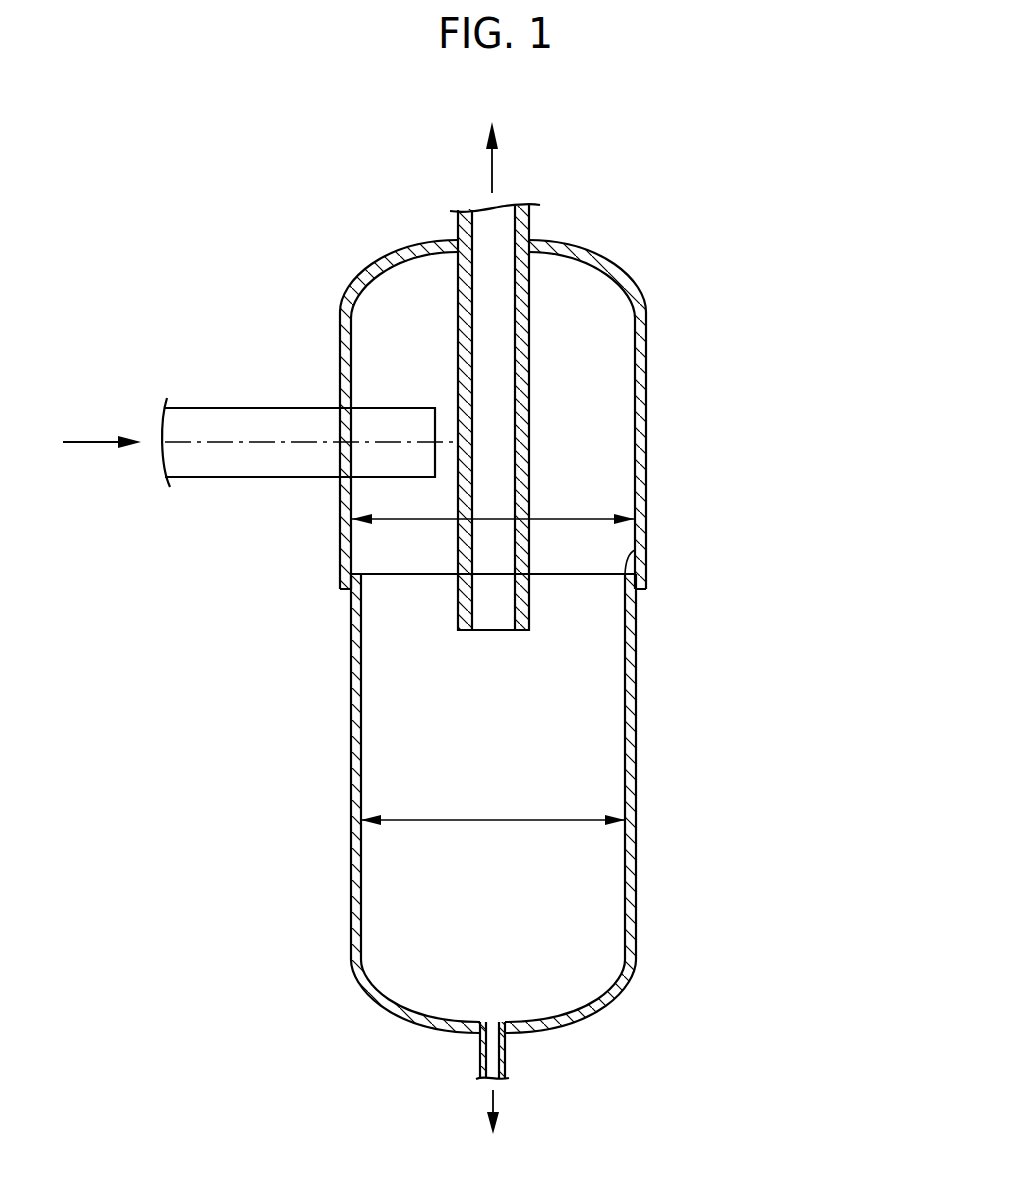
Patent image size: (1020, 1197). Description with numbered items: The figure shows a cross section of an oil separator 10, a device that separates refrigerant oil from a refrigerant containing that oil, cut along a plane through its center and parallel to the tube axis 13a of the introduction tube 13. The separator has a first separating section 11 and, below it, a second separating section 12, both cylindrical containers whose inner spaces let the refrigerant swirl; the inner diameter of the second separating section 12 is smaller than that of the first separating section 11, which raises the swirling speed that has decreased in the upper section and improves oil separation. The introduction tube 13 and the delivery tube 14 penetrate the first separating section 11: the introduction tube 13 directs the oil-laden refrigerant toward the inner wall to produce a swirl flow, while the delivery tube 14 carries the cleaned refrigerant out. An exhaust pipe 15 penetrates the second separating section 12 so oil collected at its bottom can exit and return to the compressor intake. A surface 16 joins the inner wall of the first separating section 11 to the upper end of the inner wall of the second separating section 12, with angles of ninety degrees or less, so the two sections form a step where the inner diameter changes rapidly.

The oil separator 10 is at (686, 238).
The first separating section 11 is at (640, 467).
The second separating section 12 is at (630, 655).
The introduction tube 13 is at (263, 465).
The tube axis 13a is at (228, 440).
The delivery tube 14 is at (532, 393).
The exhaust pipe 15 is at (490, 1053).
The surface 16 is at (636, 552).